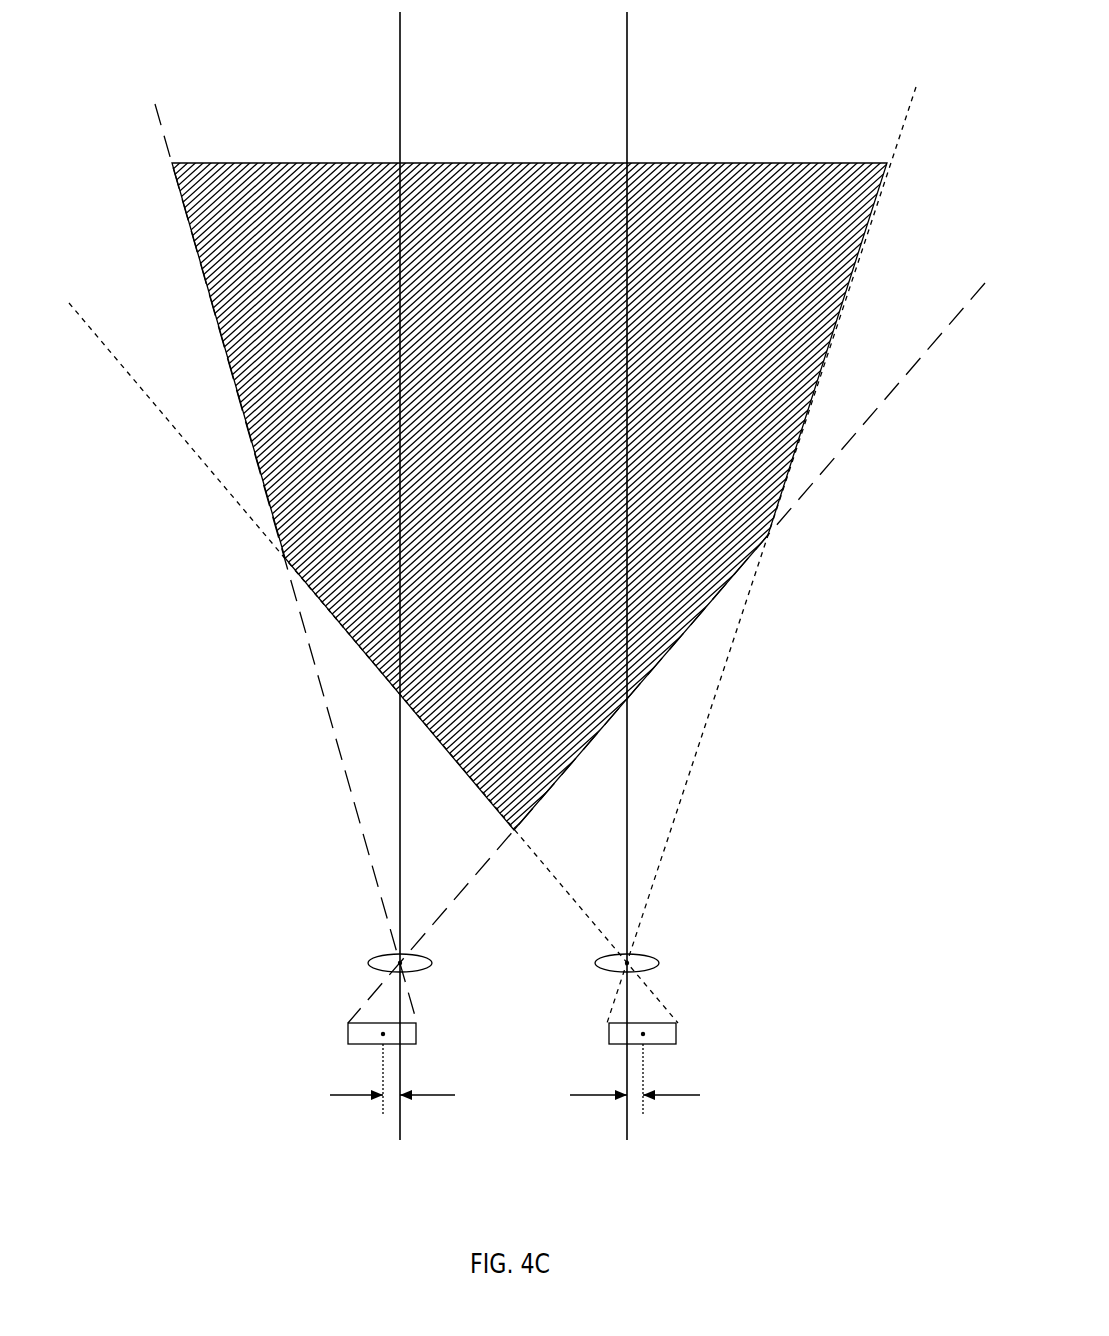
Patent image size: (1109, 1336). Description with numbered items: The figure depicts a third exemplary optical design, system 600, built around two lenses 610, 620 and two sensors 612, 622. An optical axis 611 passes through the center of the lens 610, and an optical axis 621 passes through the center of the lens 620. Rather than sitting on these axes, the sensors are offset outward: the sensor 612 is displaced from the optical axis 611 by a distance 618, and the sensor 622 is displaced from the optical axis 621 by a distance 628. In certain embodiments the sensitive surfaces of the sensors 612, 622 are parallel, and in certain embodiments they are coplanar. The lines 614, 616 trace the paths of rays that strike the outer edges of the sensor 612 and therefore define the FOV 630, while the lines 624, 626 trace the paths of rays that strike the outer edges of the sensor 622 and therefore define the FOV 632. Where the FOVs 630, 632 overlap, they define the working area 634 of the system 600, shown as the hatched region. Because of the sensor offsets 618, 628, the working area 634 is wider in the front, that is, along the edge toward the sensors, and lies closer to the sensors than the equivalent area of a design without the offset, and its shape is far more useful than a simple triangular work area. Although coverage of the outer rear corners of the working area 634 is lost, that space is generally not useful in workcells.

The system 600 is at (717, 37).
The lens 610 is at (370, 958).
The optical axis 611 is at (428, 576).
The sensor 612 is at (359, 1069).
The line 614 is at (286, 563).
The line 616 is at (666, 653).
The offset distance 618 is at (371, 1095).
The lens 620 is at (652, 958).
The optical axis 621 is at (601, 576).
The sensor 622 is at (665, 1069).
The line 624 is at (761, 555).
The line 626 is at (373, 663).
The offset distance 628 is at (659, 1095).
The field of view 630 is at (434, 805).
The field of view 632 is at (596, 805).
The working area 634 is at (529, 571).